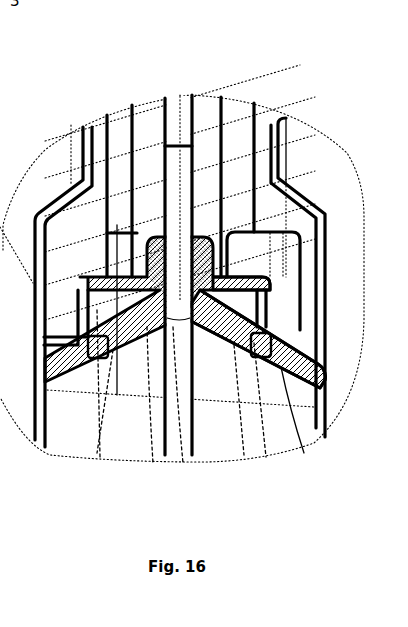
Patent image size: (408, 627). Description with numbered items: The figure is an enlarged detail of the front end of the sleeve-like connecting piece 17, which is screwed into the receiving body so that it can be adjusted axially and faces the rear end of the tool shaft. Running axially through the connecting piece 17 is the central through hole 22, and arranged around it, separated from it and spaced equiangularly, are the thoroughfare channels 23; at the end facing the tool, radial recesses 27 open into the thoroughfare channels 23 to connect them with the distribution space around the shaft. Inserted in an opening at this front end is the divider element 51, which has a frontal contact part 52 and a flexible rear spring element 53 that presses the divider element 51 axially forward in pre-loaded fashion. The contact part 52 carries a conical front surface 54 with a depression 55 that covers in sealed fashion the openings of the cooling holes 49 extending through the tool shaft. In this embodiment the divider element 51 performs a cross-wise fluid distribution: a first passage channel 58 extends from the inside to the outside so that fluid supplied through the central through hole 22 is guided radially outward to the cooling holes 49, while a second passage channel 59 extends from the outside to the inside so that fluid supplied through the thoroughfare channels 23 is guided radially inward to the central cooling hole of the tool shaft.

The sleeve-like connecting piece 17 is at (147, 113).
The central through hole 22 is at (188, 200).
The thoroughfare channels 23 is at (236, 118).
The radial recesses 27 is at (287, 233).
The cooling holes 49 is at (94, 455).
The divider element 51 is at (143, 262).
The contact part 52 is at (311, 357).
The rear spring element 53 is at (247, 277).
The conical front surface 54 is at (304, 440).
The depression 55 is at (161, 405).
The first passage channel 58 is at (193, 348).
The second passage channel 59 is at (257, 320).